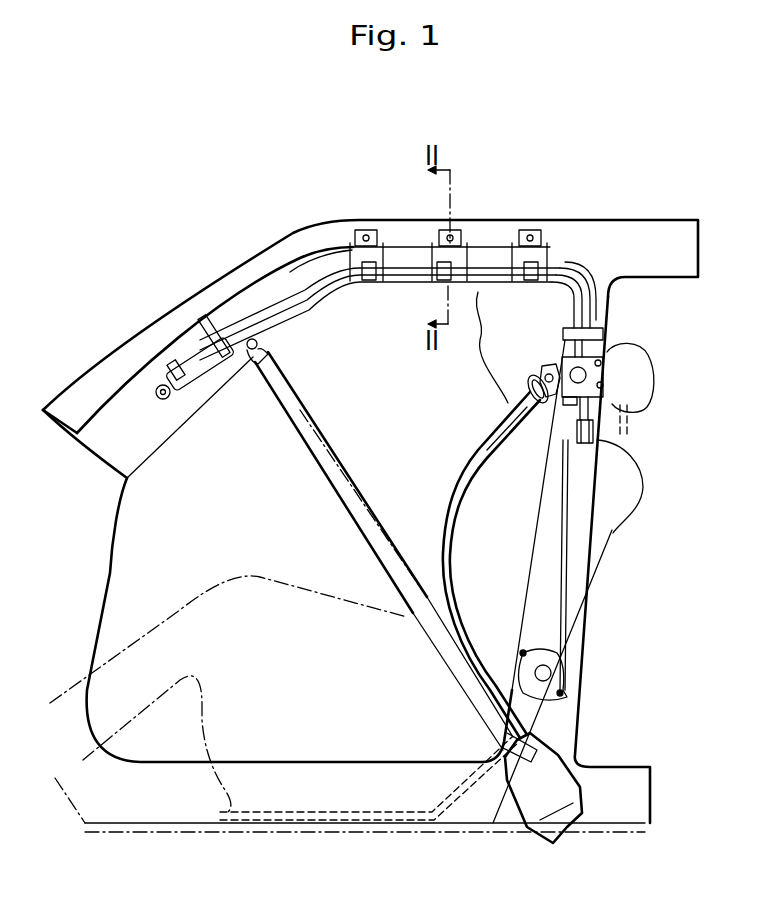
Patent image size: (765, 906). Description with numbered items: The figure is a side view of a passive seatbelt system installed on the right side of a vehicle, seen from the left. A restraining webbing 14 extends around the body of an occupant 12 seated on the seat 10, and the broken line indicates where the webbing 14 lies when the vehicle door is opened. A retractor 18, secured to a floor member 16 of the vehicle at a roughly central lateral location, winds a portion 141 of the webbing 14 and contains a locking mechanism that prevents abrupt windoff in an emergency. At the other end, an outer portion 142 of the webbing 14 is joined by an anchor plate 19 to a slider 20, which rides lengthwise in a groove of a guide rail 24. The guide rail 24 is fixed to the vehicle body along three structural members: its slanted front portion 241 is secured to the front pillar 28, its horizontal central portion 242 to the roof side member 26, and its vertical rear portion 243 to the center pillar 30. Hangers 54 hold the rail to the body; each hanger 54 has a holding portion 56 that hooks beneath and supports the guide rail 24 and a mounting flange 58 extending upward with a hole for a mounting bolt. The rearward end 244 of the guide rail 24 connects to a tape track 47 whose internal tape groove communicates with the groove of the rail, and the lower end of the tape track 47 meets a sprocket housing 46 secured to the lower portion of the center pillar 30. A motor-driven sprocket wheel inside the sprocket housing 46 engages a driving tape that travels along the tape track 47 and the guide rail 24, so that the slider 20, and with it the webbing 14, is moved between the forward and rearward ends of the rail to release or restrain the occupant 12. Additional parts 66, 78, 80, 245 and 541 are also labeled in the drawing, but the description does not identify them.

The seat 10 is at (620, 538).
The occupant 12 is at (260, 580).
The restraining webbing 14 is at (347, 463).
The floor member 16 is at (600, 833).
The retractor 18 is at (560, 775).
The anchor plate 19 is at (528, 378).
The slider 20 is at (548, 368).
The guide rail 24 is at (490, 242).
The roof side member 26 is at (388, 238).
The front pillar 28 is at (220, 382).
The center pillar 30 is at (540, 502).
The sprocket housing 46 is at (580, 672).
The tape track 47 is at (570, 566).
The hanger 54 is at (545, 238).
The holding portion 56 is at (376, 284).
The mounting flange 58 is at (362, 240).
The center pillar portion 66 is at (580, 256).
The bolt 78 is at (158, 394).
The drive unit 80 is at (605, 374).
The webbing portion 141 is at (490, 712).
The outer portion of the webbing 142 is at (524, 410).
The slanted front portion 241 is at (193, 345).
The horizontal central portion 242 is at (433, 245).
The vertical rear portion 243 is at (588, 297).
The rearward end 244 is at (637, 413).
The front rail end 245 is at (173, 362).
The clamp 541 is at (210, 313).